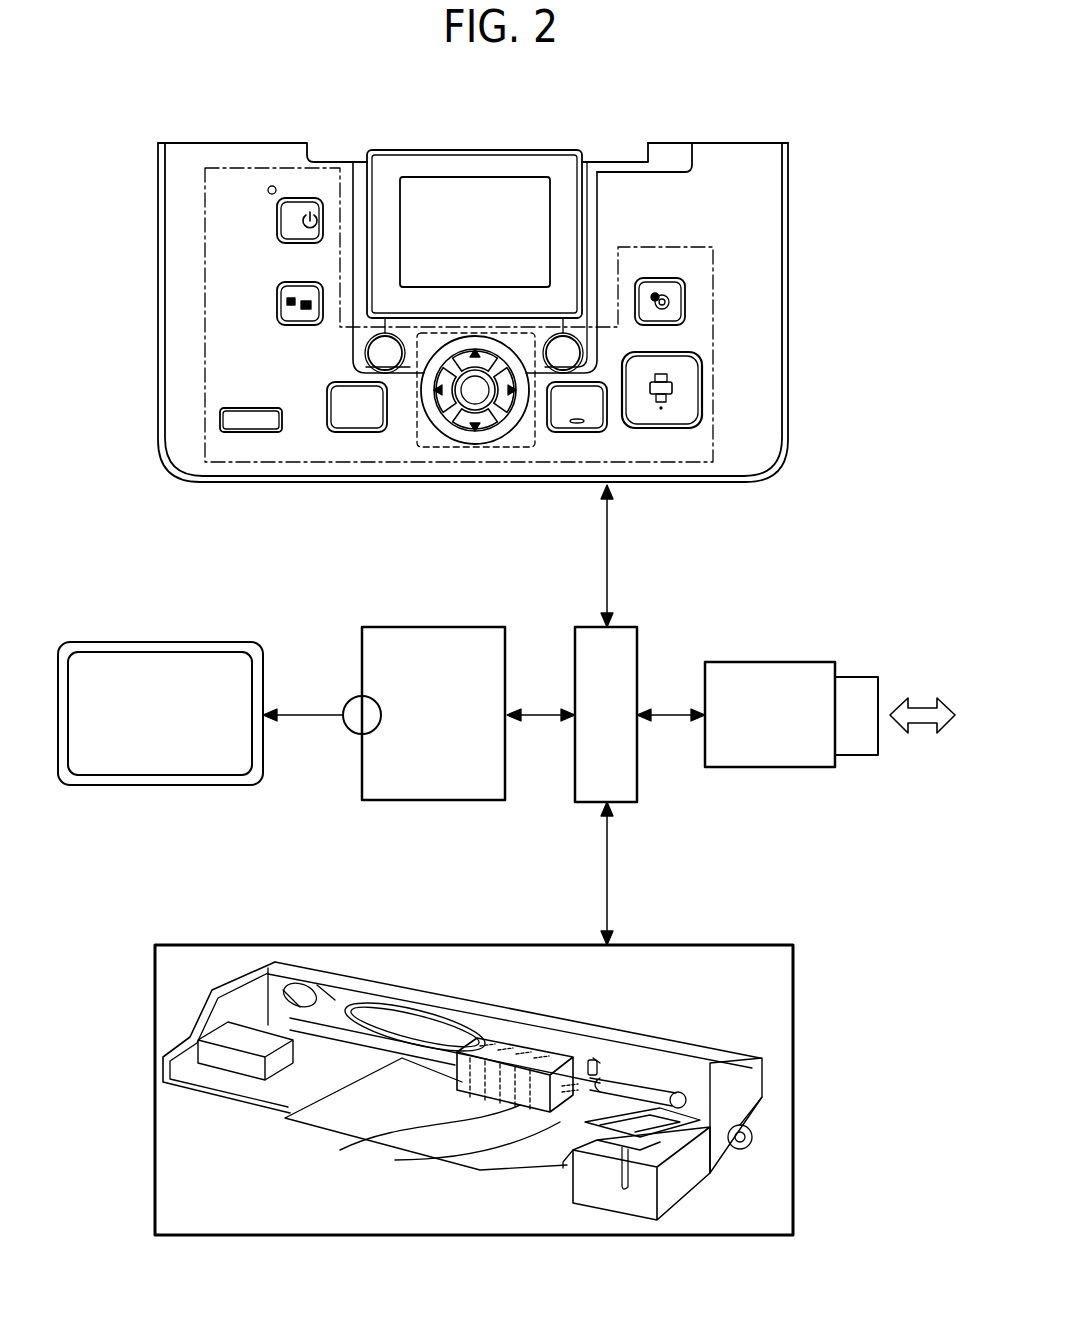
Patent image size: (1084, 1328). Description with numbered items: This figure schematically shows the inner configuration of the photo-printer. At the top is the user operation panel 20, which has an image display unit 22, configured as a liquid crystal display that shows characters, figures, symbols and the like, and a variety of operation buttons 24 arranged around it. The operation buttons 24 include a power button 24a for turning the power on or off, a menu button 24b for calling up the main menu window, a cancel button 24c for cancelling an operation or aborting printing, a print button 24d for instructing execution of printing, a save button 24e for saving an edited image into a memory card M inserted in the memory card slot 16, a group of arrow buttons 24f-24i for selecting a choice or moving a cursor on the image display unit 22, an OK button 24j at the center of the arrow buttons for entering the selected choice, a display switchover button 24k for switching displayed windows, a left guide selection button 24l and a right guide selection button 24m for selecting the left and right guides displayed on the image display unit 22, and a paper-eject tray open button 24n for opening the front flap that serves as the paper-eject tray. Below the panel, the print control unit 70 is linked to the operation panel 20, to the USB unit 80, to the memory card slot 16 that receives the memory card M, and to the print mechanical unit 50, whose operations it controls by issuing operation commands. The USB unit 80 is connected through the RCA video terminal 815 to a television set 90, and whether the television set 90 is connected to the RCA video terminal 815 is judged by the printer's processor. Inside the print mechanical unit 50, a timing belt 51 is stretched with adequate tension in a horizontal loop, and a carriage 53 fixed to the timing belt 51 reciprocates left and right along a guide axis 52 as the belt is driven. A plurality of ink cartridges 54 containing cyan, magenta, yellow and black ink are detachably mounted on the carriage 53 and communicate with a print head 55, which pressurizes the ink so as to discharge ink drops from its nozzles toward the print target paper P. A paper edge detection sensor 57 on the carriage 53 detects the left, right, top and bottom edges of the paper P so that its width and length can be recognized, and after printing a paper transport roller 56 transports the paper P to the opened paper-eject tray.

The user operation panel 20 is at (750, 184).
The image display unit 22 is at (490, 239).
The operation buttons 24 is at (713, 247).
The power button 24a is at (277, 206).
The menu button 24b is at (327, 396).
The cancel button 24c is at (597, 432).
The print button 24d is at (680, 408).
The save button 24e is at (670, 290).
The arrow buttons 24f-24i is at (520, 447).
The OK button 24j is at (462, 398).
The display switchover button 24k is at (277, 289).
The left guide selection button 24l is at (368, 349).
The right guide selection button 24m is at (582, 348).
The paper-eject tray open button 24n is at (220, 419).
The memory card slot 16 is at (765, 662).
The memory card M is at (850, 677).
The print control unit 70 is at (637, 785).
The USB unit 80 is at (450, 800).
The RCA video terminal 815 is at (345, 700).
The television set 90 is at (100, 642).
The print mechanical unit 50 is at (720, 945).
The timing belt 51 is at (648, 1082).
The guide axis 52 is at (320, 1020).
The carriage 53 is at (468, 1132).
The ink cartridges 54 is at (512, 1040).
The print head 55 is at (528, 1108).
The paper transport roller 56 is at (326, 1068).
The paper edge detection sensor 57 is at (606, 1050).
The print target paper P is at (352, 1122).